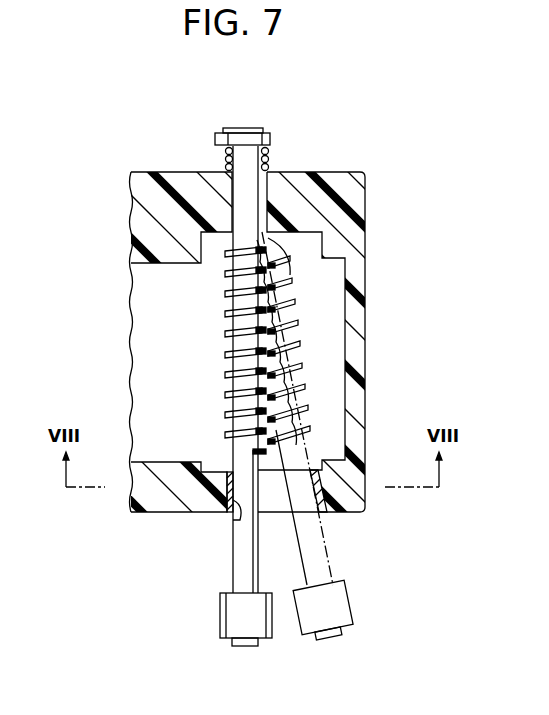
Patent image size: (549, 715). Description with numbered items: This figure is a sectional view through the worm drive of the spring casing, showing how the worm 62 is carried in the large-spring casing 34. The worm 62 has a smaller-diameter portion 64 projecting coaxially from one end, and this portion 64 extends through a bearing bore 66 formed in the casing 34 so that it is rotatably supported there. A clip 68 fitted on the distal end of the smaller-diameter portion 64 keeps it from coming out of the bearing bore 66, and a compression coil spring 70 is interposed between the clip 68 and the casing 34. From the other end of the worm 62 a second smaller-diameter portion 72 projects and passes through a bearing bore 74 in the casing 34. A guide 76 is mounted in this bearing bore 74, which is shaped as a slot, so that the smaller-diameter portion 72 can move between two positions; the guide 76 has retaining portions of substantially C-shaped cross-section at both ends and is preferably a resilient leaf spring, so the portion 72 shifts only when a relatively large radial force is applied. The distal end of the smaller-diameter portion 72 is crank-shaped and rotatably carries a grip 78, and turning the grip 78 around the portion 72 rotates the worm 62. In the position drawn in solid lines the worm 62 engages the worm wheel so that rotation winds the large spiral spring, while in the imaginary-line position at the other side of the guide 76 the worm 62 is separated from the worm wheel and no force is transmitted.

The large-spring casing 34 is at (336, 173).
The worm 62 is at (225, 311).
The smaller-diameter portion 64 is at (260, 129).
The bearing bore 66 is at (225, 243).
The clip 68 is at (226, 131).
The compression coil spring 70 is at (224, 158).
The smaller-diameter portion 72 is at (237, 564).
The bearing bore 74 is at (236, 517).
The guide 76 is at (322, 484).
The grip 78 is at (225, 612).